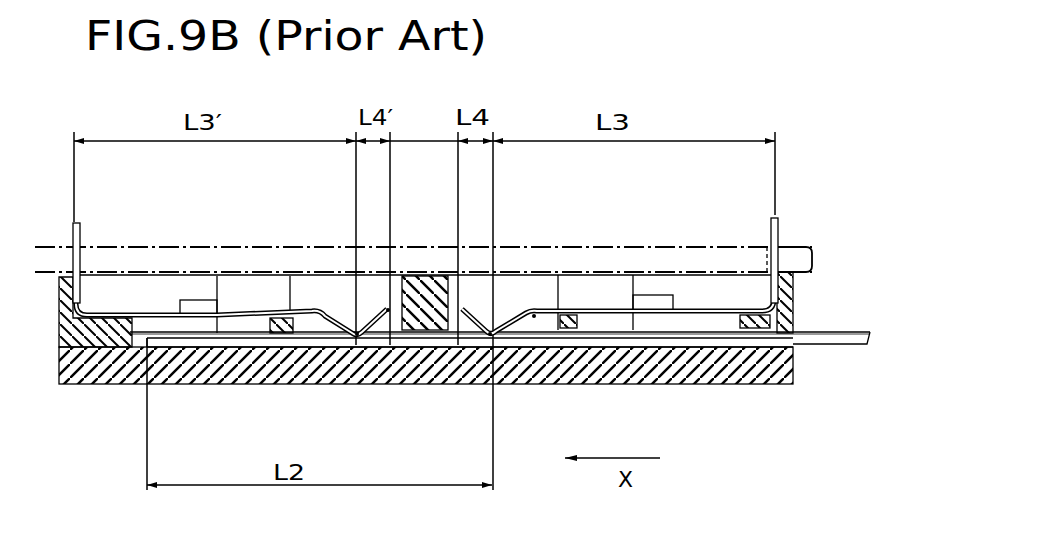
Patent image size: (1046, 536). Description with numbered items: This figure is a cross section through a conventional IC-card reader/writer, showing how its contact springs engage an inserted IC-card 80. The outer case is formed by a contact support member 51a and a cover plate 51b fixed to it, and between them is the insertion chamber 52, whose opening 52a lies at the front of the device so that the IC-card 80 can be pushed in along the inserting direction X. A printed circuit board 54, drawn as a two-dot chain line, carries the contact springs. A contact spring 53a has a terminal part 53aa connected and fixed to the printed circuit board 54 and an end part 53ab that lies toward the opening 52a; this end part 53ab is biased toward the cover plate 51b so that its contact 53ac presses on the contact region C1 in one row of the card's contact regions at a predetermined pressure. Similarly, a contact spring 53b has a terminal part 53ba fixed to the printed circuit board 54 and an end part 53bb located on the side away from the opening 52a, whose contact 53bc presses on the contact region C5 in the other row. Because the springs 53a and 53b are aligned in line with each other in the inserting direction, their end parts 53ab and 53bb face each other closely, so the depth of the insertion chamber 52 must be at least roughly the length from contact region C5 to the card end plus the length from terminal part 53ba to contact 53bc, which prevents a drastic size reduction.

The printed circuit board 54 is at (792, 250).
The contact support member 51a is at (787, 290).
The cover plate 51b is at (762, 381).
The insertion chamber 52 is at (712, 333).
The opening 52a is at (793, 327).
The IC-card 80 is at (840, 350).
The contact spring 53a is at (157, 309).
The terminal part 53aa is at (78, 228).
The end part 53ab is at (272, 336).
The contact 53ac is at (357, 339).
The contact region C1 is at (386, 348).
The contact spring 53b is at (600, 300).
The terminal part 53ba is at (772, 224).
The end part 53bb is at (555, 332).
The contact 53bc is at (535, 322).
The contact region C5 is at (488, 348).